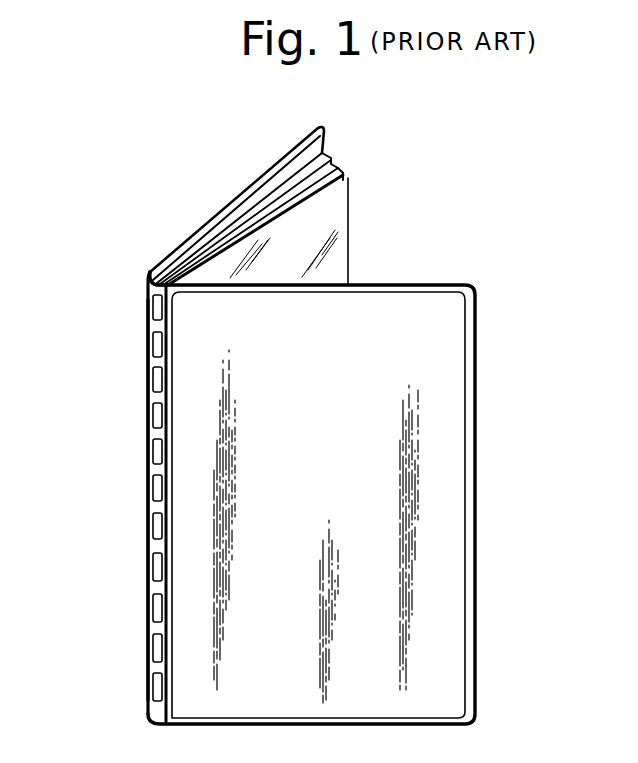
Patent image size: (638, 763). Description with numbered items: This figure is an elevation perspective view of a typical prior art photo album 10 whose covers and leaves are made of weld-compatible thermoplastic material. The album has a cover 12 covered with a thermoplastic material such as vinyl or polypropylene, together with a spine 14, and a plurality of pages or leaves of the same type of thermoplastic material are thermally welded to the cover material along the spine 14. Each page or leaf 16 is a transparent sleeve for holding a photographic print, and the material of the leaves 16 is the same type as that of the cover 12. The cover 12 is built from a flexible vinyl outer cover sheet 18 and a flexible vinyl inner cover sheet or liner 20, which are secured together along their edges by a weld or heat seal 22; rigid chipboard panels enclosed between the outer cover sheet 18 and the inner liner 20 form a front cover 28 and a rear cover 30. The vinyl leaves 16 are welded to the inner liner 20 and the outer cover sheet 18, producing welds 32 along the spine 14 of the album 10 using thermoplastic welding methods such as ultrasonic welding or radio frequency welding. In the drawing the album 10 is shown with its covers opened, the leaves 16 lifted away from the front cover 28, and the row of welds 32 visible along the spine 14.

The prior art photo album 10 is at (148, 402).
The cover 12 is at (477, 538).
The spine 14 is at (148, 568).
The page or leaf 16 is at (340, 173).
The outer cover sheet 18 is at (343, 456).
The inner cover sheet or liner 20 is at (318, 146).
The weld or heat seal 22 is at (472, 442).
The front cover 28 is at (475, 643).
The rear cover 30 is at (240, 198).
The weld 32 is at (152, 455).